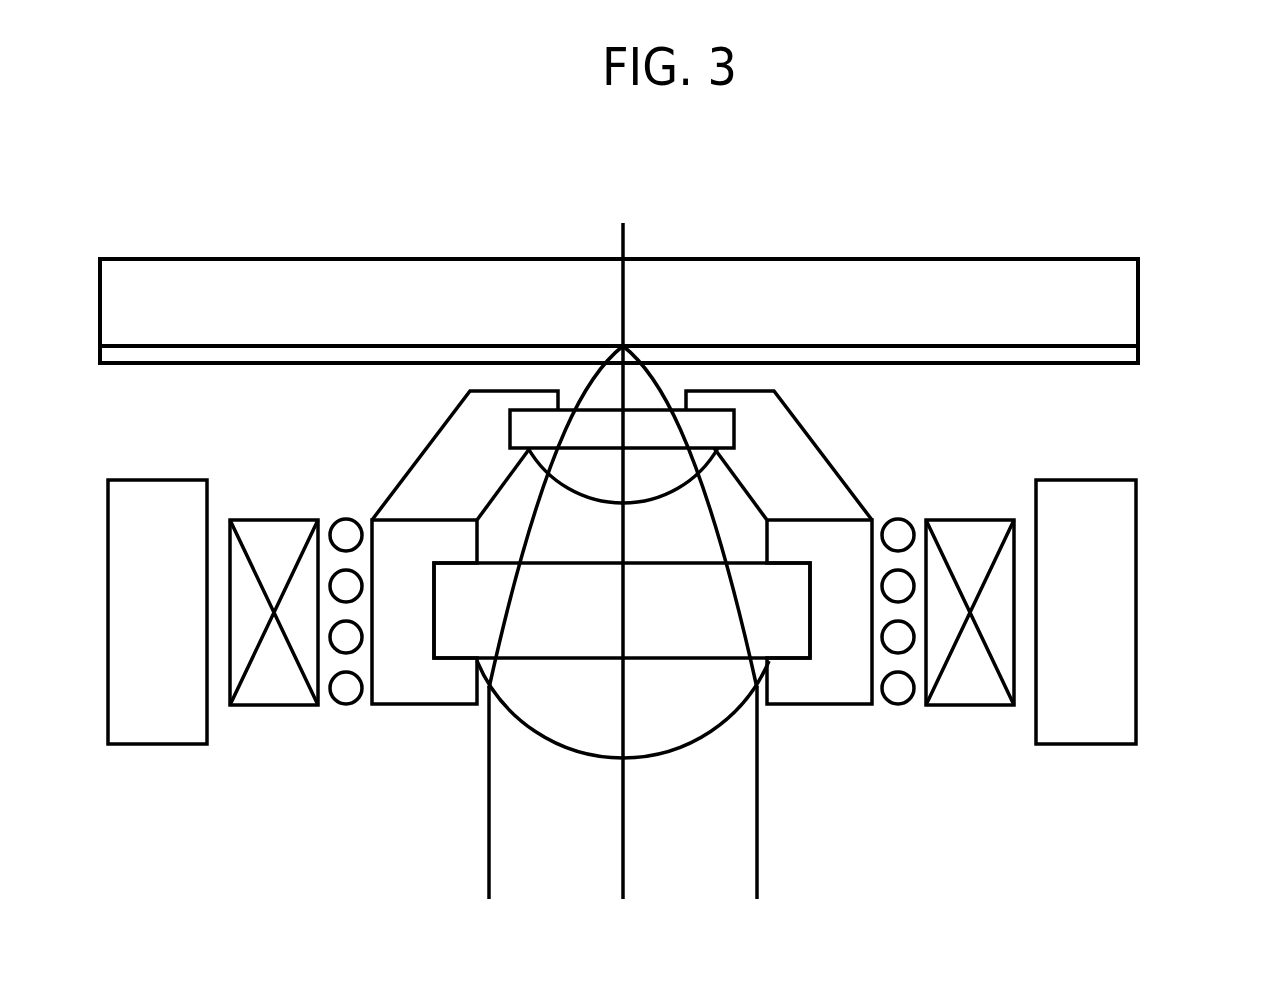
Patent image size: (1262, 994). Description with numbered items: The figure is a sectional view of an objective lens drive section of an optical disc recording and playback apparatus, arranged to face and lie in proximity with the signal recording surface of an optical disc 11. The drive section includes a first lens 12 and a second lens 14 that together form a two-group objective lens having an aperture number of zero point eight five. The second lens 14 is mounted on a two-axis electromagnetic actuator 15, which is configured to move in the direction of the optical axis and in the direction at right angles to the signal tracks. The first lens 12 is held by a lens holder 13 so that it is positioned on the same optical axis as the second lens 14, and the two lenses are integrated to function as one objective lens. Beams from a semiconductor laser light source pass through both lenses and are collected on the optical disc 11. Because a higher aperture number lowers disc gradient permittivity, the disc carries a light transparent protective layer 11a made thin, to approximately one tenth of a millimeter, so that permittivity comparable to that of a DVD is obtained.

The optical disc 11 is at (1122, 284).
The light transparent protective layer 11a is at (1122, 364).
The first lens 12 is at (525, 420).
The lens holder 13 is at (403, 692).
The second lens 14 is at (722, 697).
The two-axis electromagnetic actuator 15 is at (1115, 574).